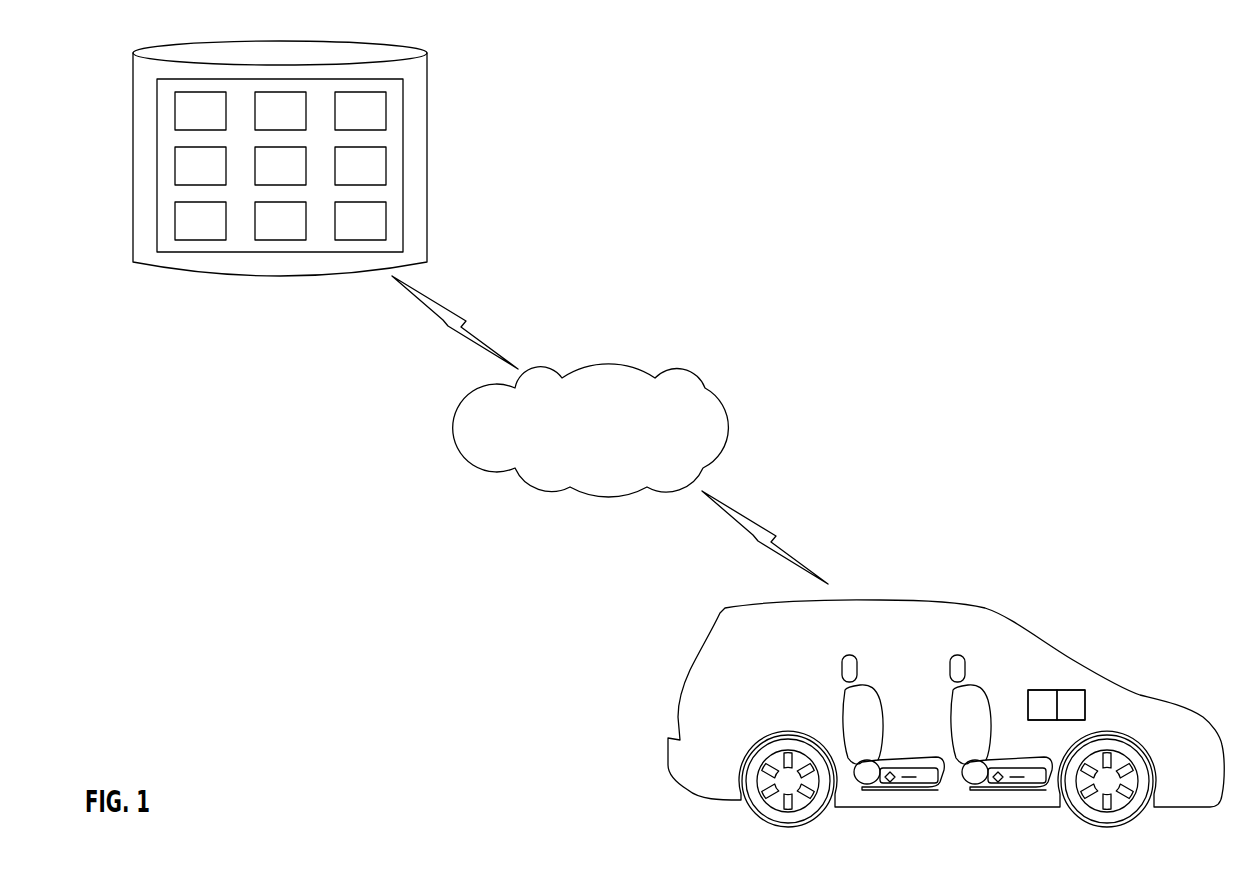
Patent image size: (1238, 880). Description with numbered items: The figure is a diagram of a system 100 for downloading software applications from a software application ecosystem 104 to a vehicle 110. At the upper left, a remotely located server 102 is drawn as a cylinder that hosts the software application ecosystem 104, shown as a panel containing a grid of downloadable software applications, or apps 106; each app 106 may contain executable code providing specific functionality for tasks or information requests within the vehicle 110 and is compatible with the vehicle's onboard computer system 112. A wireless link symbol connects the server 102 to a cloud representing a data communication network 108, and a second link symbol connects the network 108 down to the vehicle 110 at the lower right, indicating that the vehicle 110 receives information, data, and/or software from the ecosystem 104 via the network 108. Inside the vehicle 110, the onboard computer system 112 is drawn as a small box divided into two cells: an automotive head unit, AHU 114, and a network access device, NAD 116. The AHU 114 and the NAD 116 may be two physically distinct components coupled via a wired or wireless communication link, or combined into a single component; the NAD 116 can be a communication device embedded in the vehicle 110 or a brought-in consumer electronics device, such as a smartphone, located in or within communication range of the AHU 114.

The system 100 is at (982, 238).
The remotely located server 102 is at (428, 83).
The software application ecosystem 104 is at (403, 221).
The downloadable software application (app) 106 is at (386, 108).
The data communication network 108 is at (673, 372).
The vehicle 110 is at (912, 600).
The onboard computer system 112 is at (1066, 685).
The automotive head unit (AHU) 114 is at (1040, 707).
The network access device (NAD) 116 is at (1078, 706).